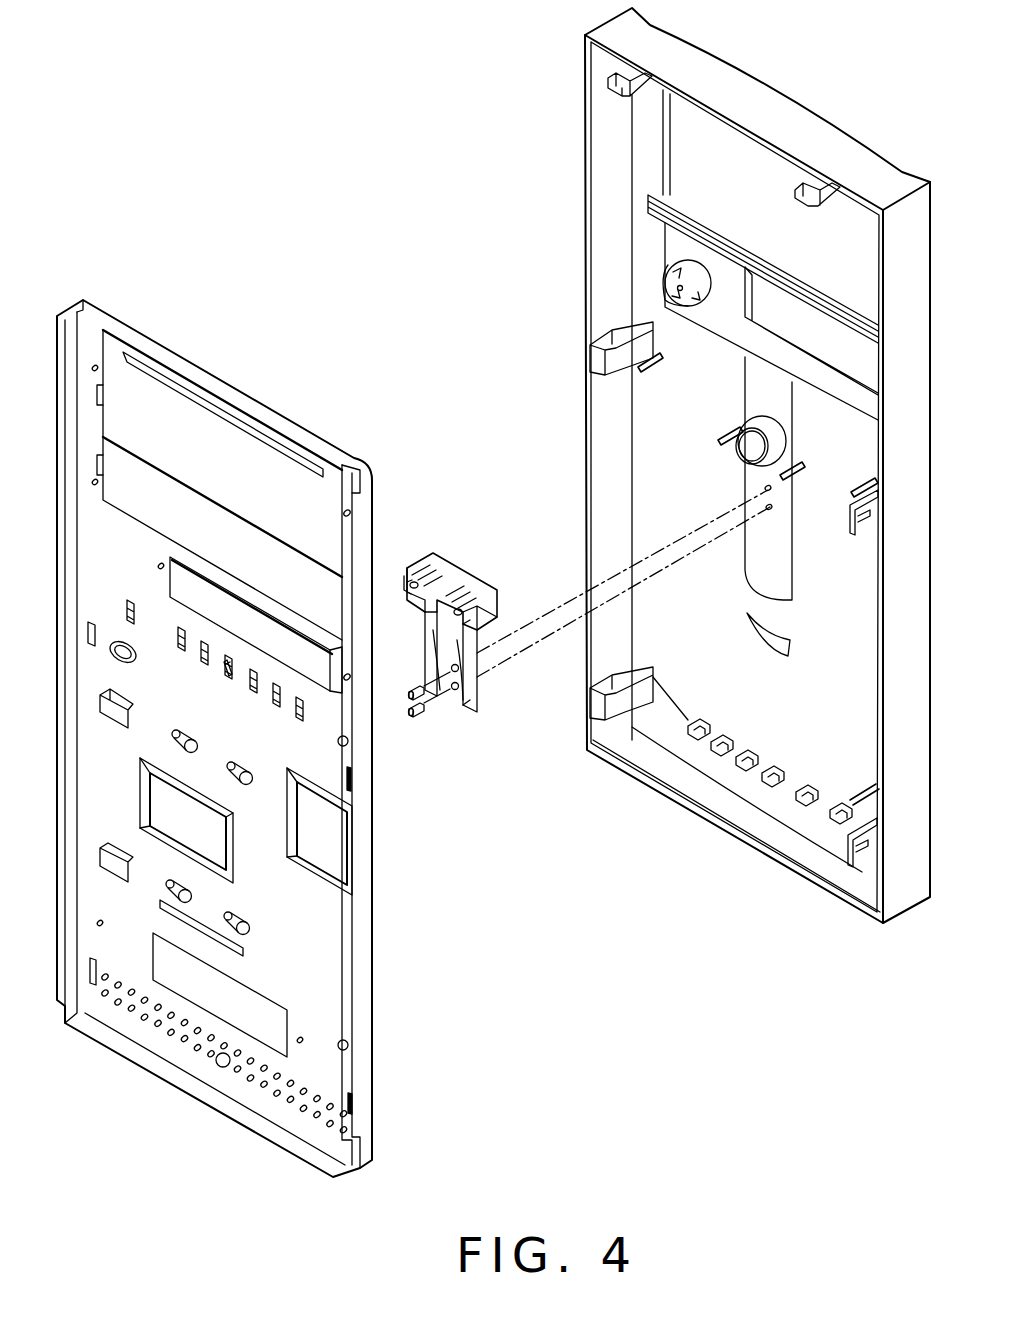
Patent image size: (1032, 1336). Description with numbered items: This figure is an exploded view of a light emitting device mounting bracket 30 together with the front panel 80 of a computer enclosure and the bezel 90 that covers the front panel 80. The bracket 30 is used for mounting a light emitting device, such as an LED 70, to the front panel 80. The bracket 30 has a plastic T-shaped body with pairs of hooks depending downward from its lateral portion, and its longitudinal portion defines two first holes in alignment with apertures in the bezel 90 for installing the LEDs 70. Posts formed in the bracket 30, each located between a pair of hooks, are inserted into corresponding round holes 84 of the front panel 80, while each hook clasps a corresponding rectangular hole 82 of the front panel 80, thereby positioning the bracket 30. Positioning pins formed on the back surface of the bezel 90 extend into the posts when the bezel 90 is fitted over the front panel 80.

The light emitting device mounting bracket 30 is at (454, 565).
The LED 70 is at (407, 722).
The front panel 80 is at (207, 362).
The rectangular hole 82 is at (224, 658).
The round hole 84 is at (228, 660).
The bezel 90 is at (775, 73).